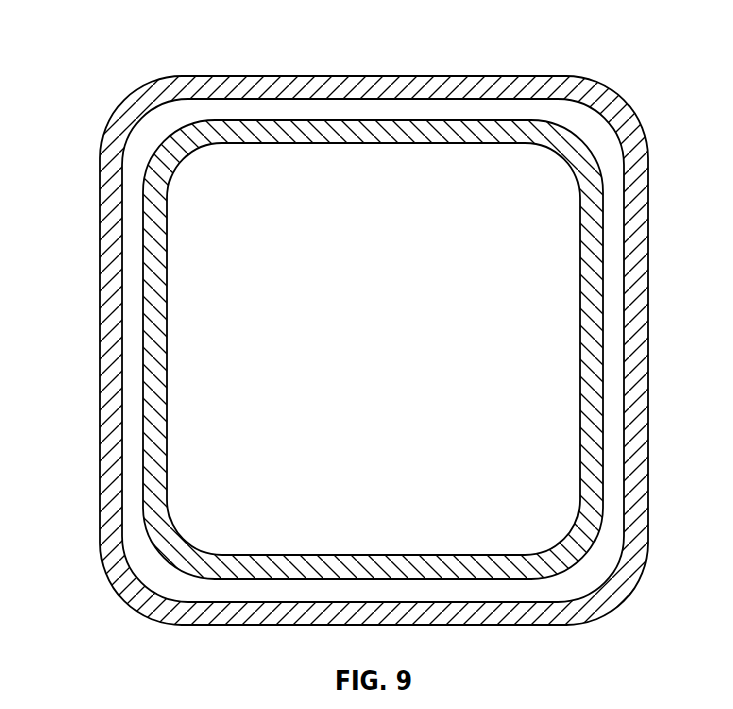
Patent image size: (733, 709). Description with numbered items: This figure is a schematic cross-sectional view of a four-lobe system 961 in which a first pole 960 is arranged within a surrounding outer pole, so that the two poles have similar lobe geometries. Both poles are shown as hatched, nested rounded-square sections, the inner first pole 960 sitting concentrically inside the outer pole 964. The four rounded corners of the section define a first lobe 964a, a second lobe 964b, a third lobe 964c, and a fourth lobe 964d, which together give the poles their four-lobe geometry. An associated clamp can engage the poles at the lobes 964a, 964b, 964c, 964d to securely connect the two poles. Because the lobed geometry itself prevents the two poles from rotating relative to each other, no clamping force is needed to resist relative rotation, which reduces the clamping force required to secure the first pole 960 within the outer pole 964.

The four-lobe system 961 is at (152, 49).
The outer frame 964 is at (637, 373).
The first lobe 964a is at (123, 97).
The second lobe 964b is at (131, 615).
The third lobe 964c is at (628, 606).
The fourth lobe 964d is at (629, 96).
The first pole 960 is at (158, 400).